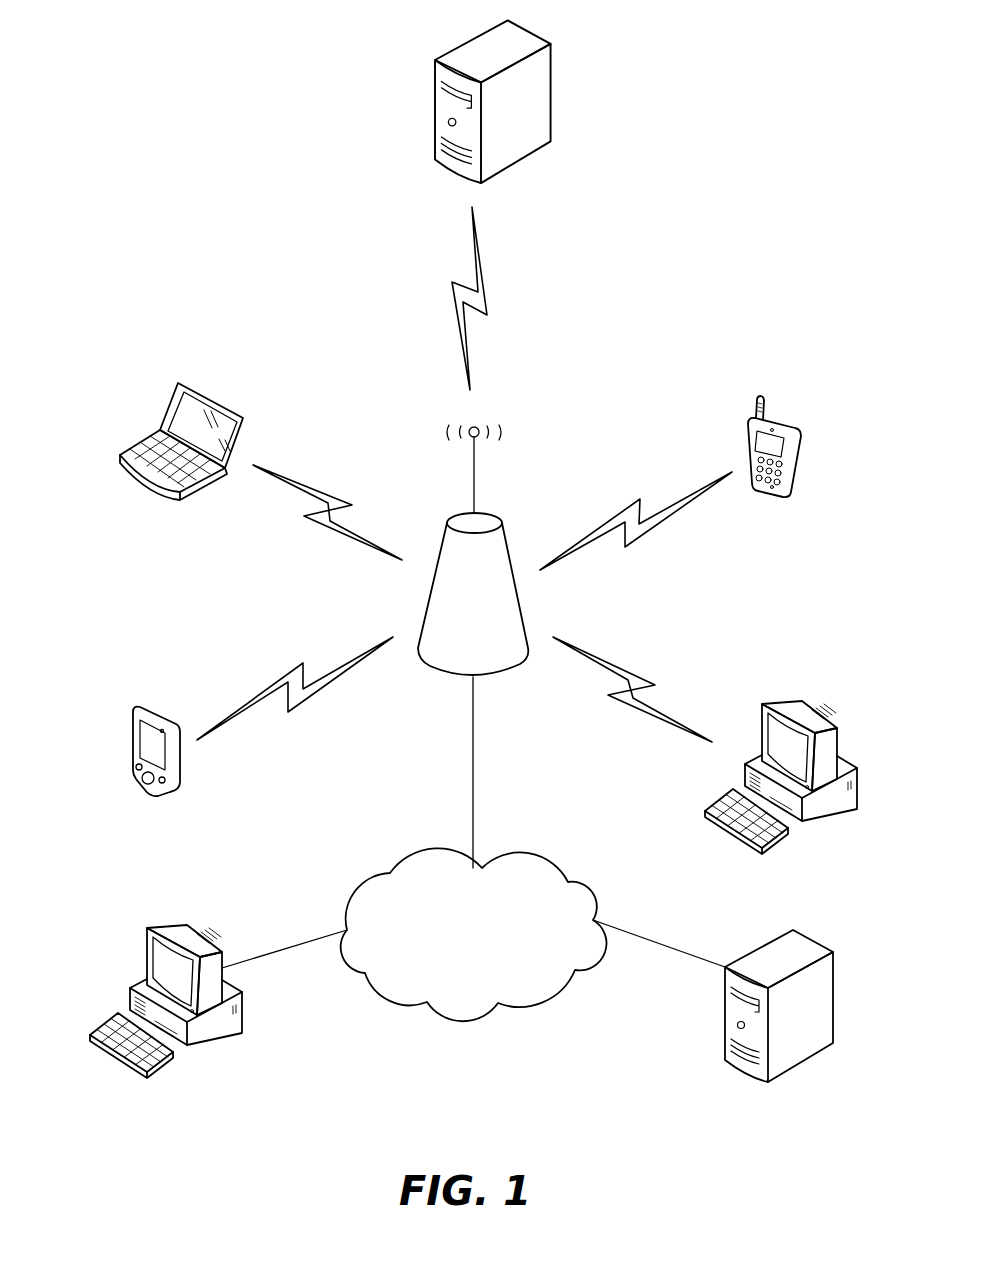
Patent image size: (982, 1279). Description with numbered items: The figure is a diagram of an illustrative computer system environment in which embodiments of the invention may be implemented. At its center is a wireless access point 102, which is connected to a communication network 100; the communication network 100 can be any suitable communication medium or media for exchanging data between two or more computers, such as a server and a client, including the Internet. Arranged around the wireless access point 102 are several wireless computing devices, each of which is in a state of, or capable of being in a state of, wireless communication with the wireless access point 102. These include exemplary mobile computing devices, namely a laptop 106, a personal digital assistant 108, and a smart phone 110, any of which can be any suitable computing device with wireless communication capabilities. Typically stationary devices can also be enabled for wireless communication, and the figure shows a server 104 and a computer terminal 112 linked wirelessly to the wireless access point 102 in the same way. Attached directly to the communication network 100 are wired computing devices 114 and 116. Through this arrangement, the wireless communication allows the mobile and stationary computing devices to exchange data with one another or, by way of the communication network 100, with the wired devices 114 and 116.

The communication network 100 is at (402, 860).
The wireless access point 102 is at (485, 417).
The server 104 is at (473, 40).
The laptop 106 is at (178, 383).
The personal digital assistant 108 is at (133, 713).
The smart phone 110 is at (787, 422).
The computer terminal 112 is at (770, 700).
The wired computing device 114 is at (147, 928).
The wired computing device 116 is at (805, 933).